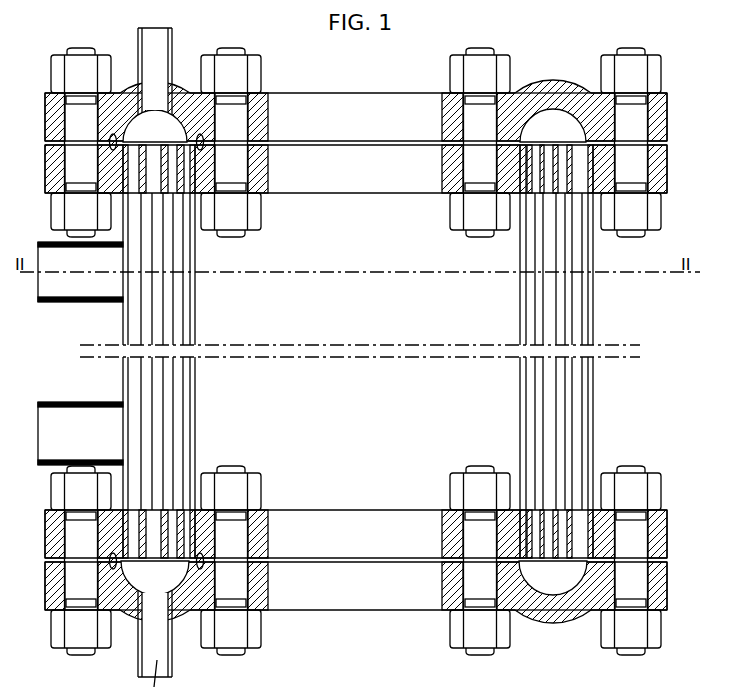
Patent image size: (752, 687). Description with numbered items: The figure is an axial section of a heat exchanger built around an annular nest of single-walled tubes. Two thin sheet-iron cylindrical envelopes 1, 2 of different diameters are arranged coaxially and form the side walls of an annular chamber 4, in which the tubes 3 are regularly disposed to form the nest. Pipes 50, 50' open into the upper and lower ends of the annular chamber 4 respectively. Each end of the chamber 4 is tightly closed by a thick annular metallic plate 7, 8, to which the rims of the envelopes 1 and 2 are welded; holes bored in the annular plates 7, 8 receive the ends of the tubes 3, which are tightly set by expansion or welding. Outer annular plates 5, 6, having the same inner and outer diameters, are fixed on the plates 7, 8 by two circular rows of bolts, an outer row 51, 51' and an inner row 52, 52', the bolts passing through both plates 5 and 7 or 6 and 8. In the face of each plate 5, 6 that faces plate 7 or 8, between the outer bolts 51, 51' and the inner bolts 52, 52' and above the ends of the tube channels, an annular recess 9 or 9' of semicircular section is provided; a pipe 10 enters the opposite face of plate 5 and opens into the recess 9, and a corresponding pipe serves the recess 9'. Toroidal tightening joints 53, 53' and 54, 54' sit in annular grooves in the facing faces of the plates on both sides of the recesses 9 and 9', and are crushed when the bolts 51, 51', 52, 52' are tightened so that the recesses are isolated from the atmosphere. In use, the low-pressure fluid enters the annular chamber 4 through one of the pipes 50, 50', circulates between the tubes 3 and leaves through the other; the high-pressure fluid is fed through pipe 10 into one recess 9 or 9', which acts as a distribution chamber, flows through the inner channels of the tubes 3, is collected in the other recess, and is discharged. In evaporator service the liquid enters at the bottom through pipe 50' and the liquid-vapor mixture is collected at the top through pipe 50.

The outer cylindrical metallic envelope 1 is at (593, 422).
The inner cylindrical metallic envelope 2 is at (522, 417).
The tubes 3 is at (178, 333).
The annular chamber 4 is at (167, 261).
The upper outer annular plate 5 is at (56, 110).
The lower outer annular plate 6 is at (56, 582).
The upper annular plate 7 is at (56, 168).
The lower annular plate 8 is at (56, 531).
The upper annular recess 9 is at (355, 143).
The lower annular recess 9' is at (355, 610).
The pipe 10 is at (159, 42).
The upper pipe 50 is at (75, 282).
The lower pipe 50' is at (71, 445).
The outer row bolt 51 is at (347, 133).
The outer row bolt 51' is at (352, 573).
The inner row bolt 52 is at (355, 135).
The inner row bolt 52' is at (355, 562).
The toroidal tightening joint 53 is at (117, 89).
The toroidal tightening joint 53' is at (105, 614).
The toroidal tightening joint 54 is at (192, 89).
The toroidal tightening joint 54' is at (198, 614).